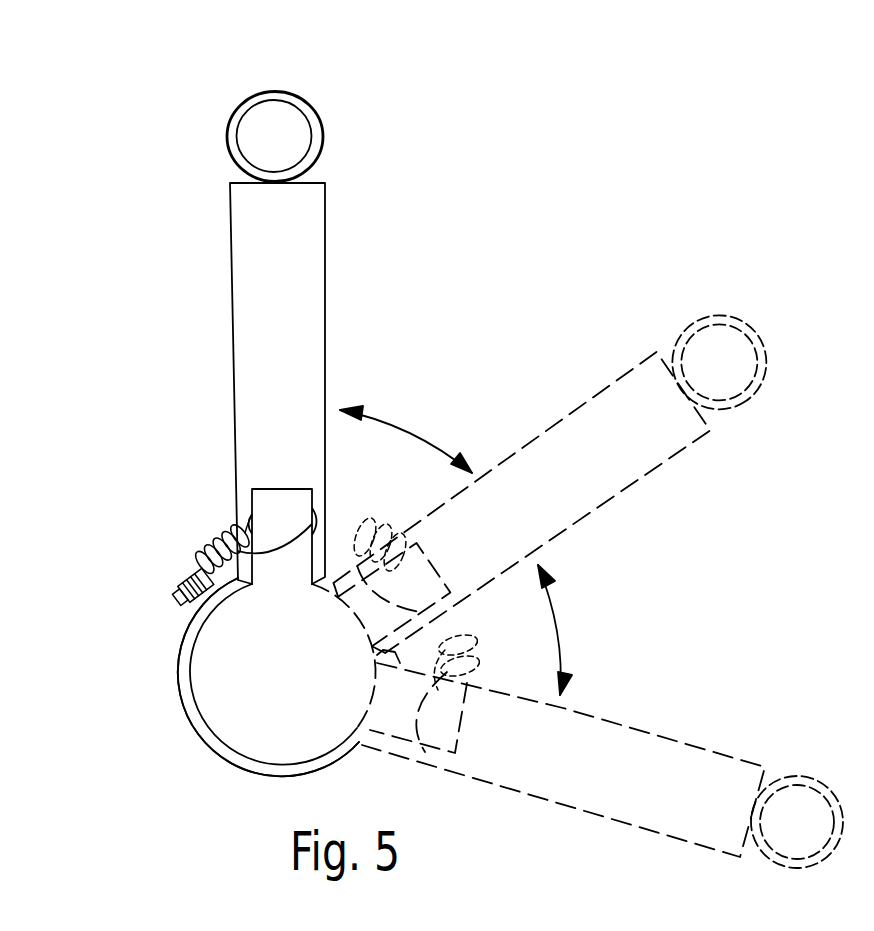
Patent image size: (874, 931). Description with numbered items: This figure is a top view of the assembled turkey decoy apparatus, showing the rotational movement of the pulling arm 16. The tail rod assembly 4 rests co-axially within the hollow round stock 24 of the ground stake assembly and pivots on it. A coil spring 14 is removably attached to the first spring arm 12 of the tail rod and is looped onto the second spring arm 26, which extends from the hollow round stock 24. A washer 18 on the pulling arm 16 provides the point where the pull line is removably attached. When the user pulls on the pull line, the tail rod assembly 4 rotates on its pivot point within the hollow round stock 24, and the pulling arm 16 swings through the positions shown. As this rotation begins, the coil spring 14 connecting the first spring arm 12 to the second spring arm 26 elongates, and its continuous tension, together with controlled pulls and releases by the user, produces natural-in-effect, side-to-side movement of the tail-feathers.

The tail rod assembly 4 is at (213, 732).
The first spring arm 12 is at (314, 503).
The coil spring 14 is at (200, 560).
The pulling arm 16 is at (234, 378).
The washer 18 is at (262, 92).
The hollow round stock 24 is at (312, 772).
The second spring arm 26 is at (184, 603).